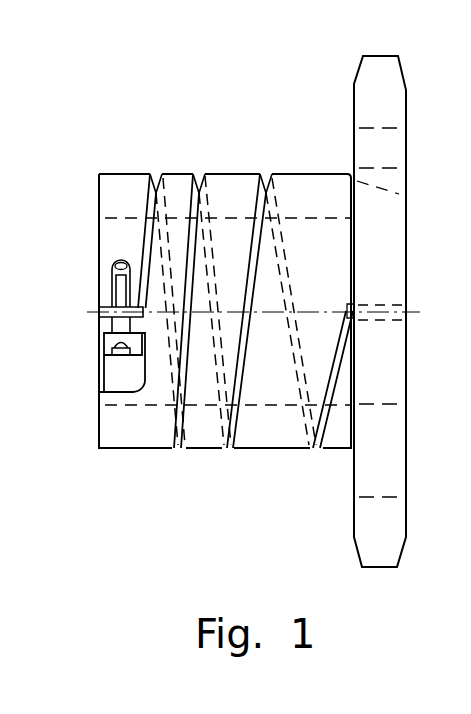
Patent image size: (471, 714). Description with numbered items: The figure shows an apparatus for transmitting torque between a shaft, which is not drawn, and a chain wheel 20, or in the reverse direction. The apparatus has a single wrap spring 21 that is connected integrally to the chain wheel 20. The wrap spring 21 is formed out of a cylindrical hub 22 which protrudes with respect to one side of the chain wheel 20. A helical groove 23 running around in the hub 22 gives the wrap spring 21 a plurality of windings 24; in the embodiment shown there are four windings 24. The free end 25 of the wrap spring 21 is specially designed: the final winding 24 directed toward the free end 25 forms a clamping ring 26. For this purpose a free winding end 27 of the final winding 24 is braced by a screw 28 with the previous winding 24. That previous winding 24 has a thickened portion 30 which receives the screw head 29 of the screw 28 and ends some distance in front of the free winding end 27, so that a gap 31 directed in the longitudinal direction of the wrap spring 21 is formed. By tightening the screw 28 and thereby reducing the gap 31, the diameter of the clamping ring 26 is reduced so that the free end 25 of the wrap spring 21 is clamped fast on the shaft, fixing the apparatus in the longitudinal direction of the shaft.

The chain wheel 20 is at (373, 97).
The wrap spring 21 is at (274, 353).
The cylindrical hub 22 is at (187, 133).
The helical groove 23 is at (317, 440).
The windings 24 is at (198, 440).
The free end 25 is at (112, 268).
The clamping ring 26 is at (117, 235).
The free winding end 27 is at (118, 326).
The screw 28 is at (118, 346).
The screw head 29 is at (135, 357).
The thickened portion 30 is at (106, 426).
The gap 31 is at (93, 312).